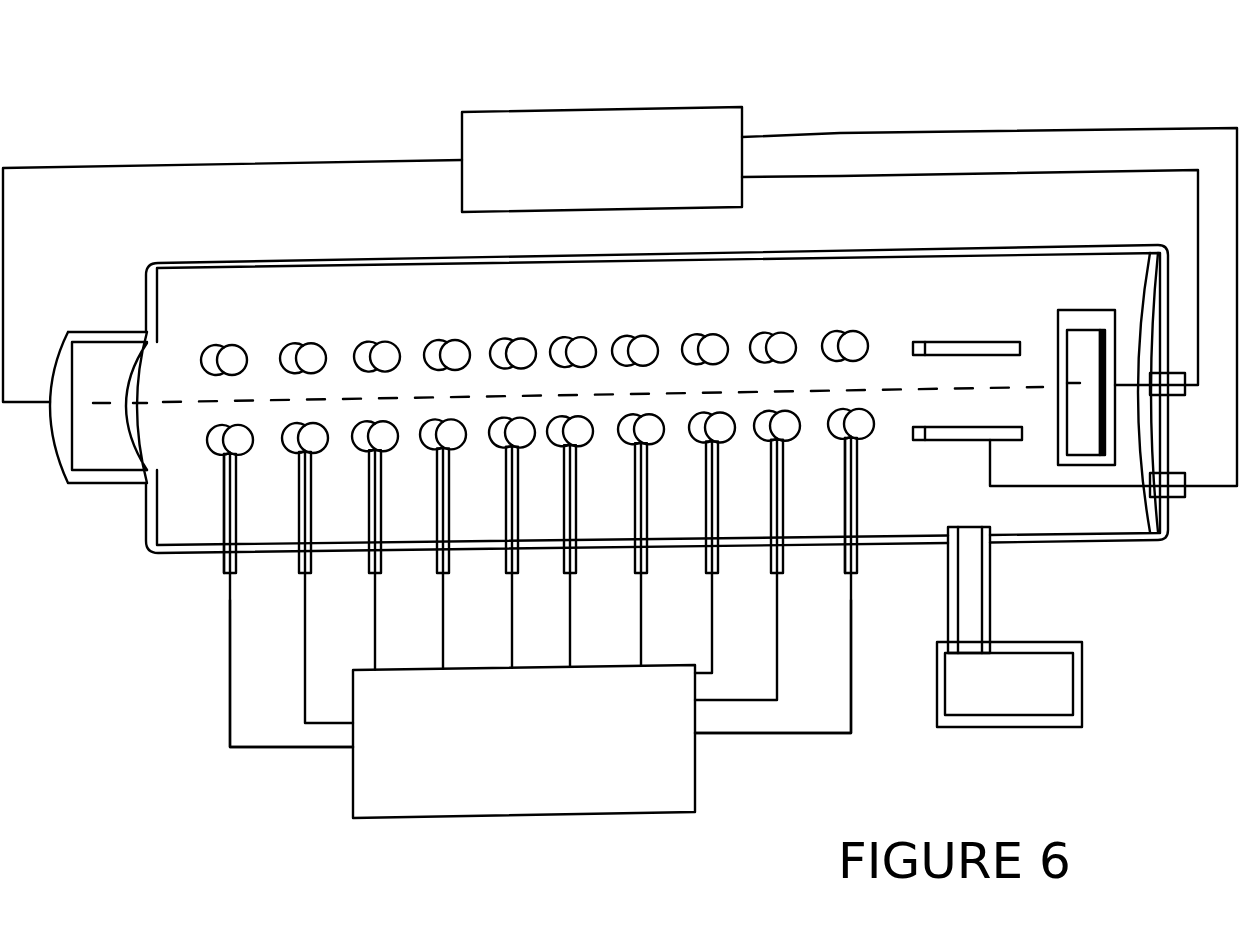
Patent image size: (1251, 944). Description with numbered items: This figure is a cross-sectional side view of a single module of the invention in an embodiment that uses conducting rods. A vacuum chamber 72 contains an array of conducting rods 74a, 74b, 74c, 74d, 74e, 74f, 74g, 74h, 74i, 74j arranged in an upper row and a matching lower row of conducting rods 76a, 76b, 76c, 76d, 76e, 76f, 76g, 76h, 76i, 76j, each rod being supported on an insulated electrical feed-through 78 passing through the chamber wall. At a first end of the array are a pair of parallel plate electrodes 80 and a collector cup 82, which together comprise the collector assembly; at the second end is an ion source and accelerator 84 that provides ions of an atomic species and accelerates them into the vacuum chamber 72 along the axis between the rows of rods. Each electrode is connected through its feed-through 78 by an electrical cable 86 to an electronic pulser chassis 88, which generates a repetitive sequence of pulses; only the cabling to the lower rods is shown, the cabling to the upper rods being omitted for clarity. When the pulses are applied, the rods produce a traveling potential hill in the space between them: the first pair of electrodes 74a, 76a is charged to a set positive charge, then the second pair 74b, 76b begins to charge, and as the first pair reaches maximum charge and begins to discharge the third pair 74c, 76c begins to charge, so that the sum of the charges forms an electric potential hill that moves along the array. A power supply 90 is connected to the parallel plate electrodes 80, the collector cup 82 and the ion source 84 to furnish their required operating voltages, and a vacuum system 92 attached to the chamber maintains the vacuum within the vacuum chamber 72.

The vacuum chamber 72 is at (182, 558).
The conducting rod 74a is at (221, 346).
The conducting rod 74b is at (300, 344).
The conducting rod 74c is at (374, 343).
The conducting rod 74d is at (444, 341).
The conducting rod 74e is at (510, 340).
The conducting rod 74f is at (570, 338).
The conducting rod 74g is at (632, 337).
The conducting rod 74h is at (702, 335).
The conducting rod 74i is at (770, 334).
The conducting rod 74j is at (842, 332).
The conducting rod 76a is at (224, 454).
The conducting rod 76b is at (299, 452).
The conducting rod 76c is at (369, 450).
The conducting rod 76d is at (437, 448).
The conducting rod 76e is at (506, 447).
The conducting rod 76f is at (564, 445).
The conducting rod 76g is at (635, 443).
The conducting rod 76h is at (706, 442).
The conducting rod 76i is at (771, 440).
The conducting rod 76j is at (845, 438).
The insulated electrical feed-through 78 is at (233, 573).
The parallel plate electrodes 80 is at (925, 342).
The collector cup 82 is at (1070, 310).
The ion source and accelerator 84 is at (95, 330).
The electrical cable 86 is at (233, 720).
The electronic pulser chassis 88 is at (353, 807).
The power supply 90 is at (742, 118).
The vacuum system 92 is at (1042, 640).